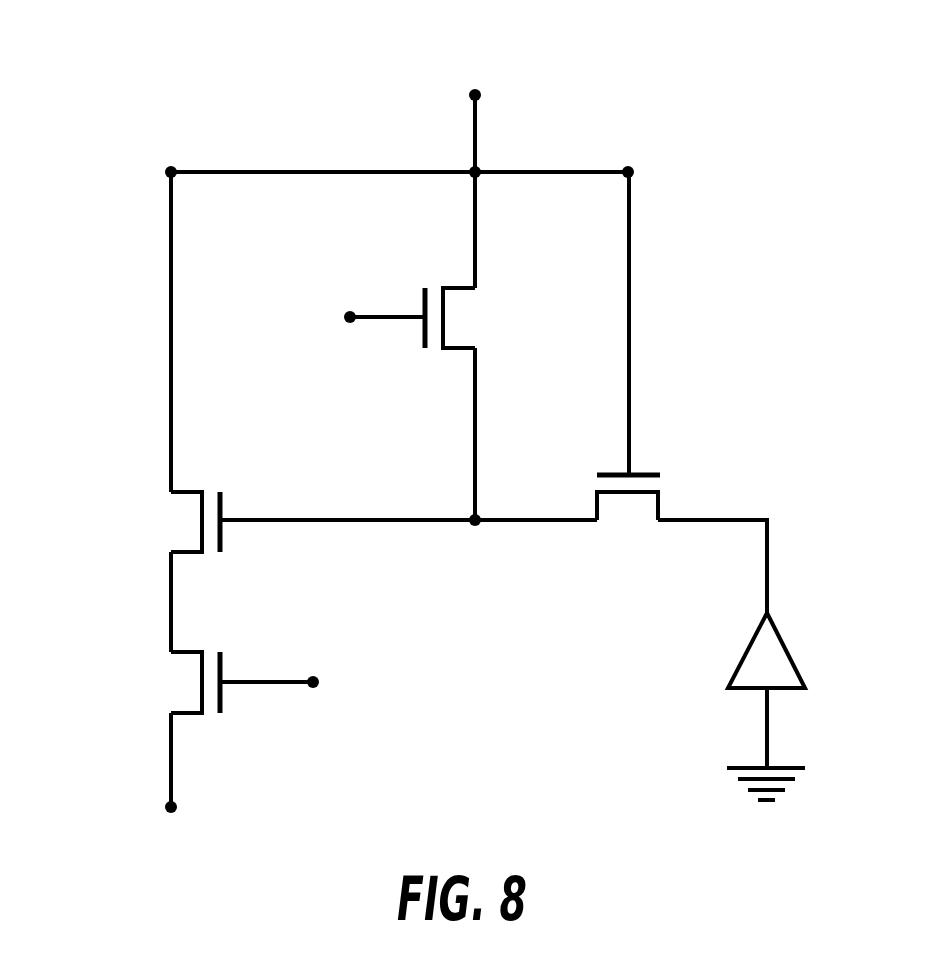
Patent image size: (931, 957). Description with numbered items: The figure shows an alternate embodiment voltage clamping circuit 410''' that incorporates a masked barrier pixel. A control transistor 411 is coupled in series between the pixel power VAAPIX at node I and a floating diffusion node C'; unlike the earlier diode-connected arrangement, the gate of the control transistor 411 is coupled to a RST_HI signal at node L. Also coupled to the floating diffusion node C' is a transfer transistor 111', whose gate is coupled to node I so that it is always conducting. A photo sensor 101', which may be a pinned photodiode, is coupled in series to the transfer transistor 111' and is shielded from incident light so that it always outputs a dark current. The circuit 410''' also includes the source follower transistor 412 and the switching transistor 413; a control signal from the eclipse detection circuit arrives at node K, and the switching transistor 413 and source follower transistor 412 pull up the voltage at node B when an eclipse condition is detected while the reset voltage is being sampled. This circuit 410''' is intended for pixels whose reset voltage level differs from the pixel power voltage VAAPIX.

The voltage clamping circuit 410''' is at (406, 437).
The control transistor 411 is at (456, 286).
The source follower transistor 412 is at (192, 490).
The switching transistor 413 is at (192, 650).
The transfer transistor 111' is at (677, 491).
The photo sensor 101' is at (802, 706).